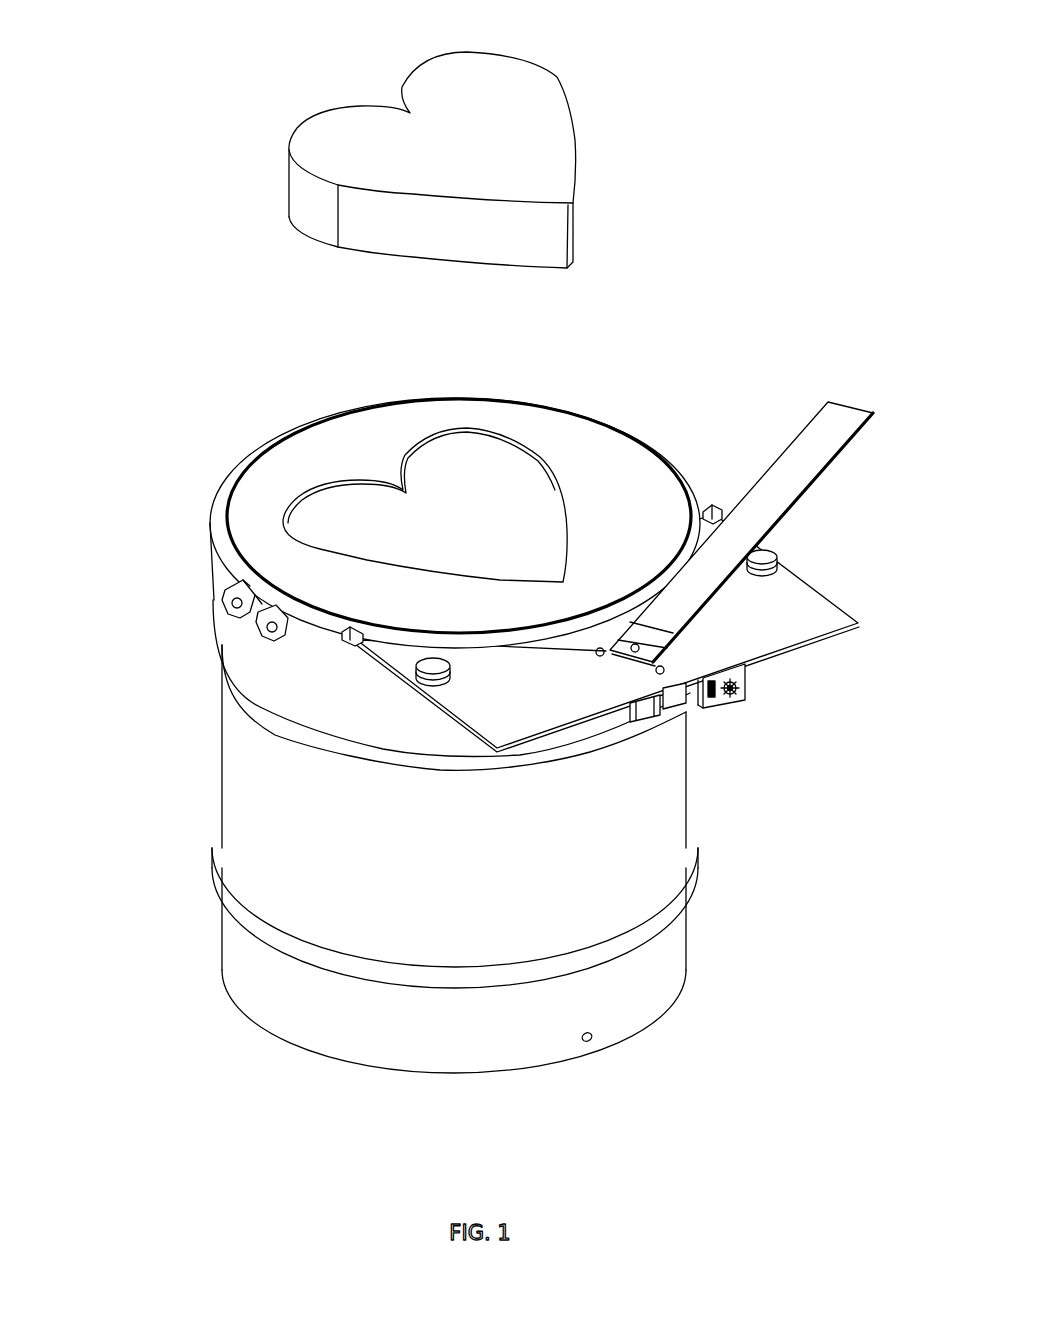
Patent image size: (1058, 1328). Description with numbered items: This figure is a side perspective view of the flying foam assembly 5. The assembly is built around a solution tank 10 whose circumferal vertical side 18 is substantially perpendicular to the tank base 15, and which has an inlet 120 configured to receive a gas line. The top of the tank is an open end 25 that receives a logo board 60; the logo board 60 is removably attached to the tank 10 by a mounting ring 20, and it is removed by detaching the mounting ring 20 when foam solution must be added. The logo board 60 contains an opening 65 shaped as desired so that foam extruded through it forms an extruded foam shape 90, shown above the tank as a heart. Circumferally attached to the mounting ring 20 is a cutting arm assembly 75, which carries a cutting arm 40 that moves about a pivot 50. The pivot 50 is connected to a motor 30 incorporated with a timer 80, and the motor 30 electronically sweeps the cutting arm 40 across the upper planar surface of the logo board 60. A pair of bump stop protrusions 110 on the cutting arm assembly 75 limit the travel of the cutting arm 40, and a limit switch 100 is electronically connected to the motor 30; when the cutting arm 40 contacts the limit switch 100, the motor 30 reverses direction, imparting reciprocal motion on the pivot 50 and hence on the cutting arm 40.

The flying foam assembly 5 is at (487, 580).
The solution tank 10 is at (690, 765).
The tank base 15 is at (290, 1040).
The circumferal vertical side 18 is at (221, 760).
The mounting ring 20 is at (208, 516).
The open end 25 is at (240, 630).
The motor 30 is at (647, 718).
The cutting arm 40 is at (868, 410).
The pivot 50 is at (647, 647).
The logo board 60 is at (335, 447).
The opening 65 is at (478, 468).
The cutting arm assembly 75 is at (778, 632).
The timer 80 is at (731, 693).
The extruded foam shape 90 is at (575, 137).
The limit switch 100 is at (343, 632).
The bump stop protrusions 110 is at (415, 680).
The inlet 120 is at (591, 1041).